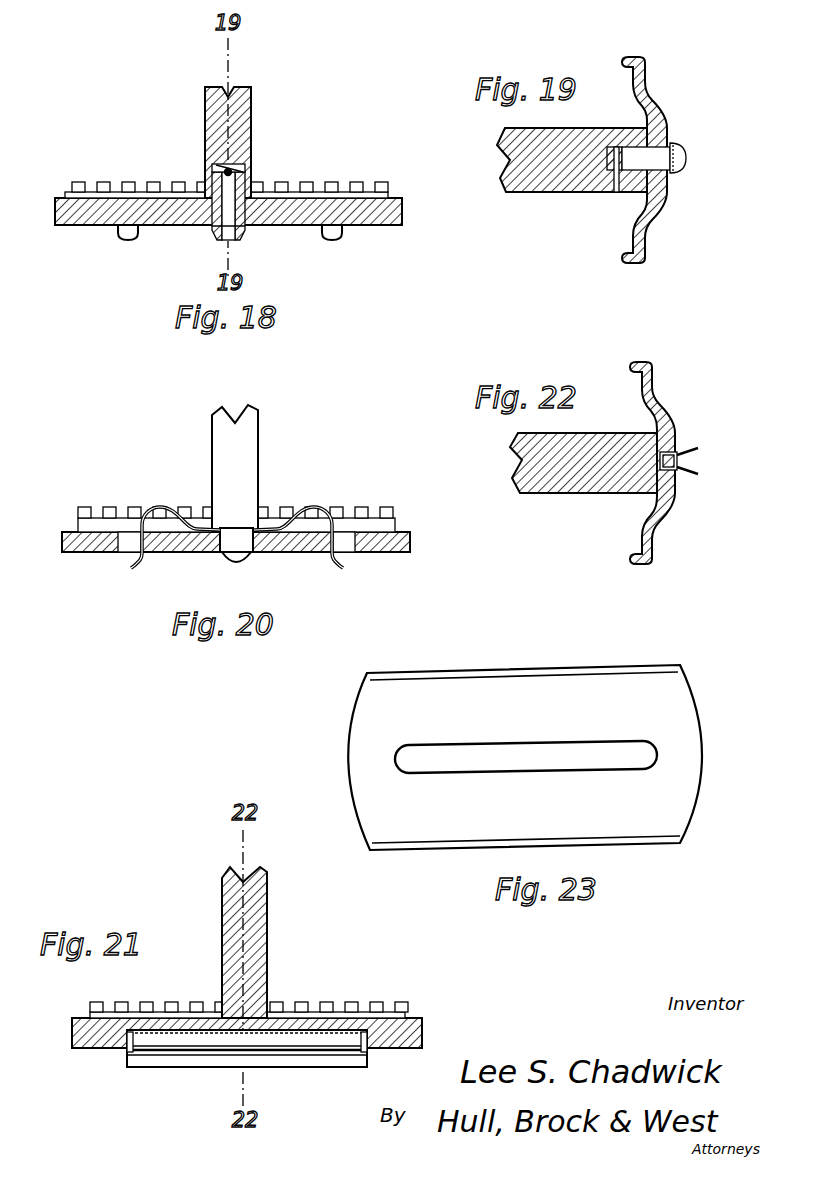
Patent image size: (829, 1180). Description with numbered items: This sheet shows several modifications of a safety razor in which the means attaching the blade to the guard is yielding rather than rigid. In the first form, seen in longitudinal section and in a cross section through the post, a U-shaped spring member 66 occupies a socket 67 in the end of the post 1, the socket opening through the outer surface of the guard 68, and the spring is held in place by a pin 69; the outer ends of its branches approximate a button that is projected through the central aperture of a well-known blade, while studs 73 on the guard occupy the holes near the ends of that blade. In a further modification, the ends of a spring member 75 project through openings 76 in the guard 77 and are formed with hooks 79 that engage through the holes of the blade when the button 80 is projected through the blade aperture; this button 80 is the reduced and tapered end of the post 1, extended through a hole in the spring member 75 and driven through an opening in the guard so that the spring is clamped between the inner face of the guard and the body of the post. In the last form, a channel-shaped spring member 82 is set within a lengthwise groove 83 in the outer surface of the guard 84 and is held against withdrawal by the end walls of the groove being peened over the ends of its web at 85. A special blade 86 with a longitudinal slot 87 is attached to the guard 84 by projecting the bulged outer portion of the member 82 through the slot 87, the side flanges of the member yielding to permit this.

In FIG. 18, the post 1 is at (252, 108).
In FIG. 19, the post 1 is at (548, 196).
In FIG. 20, the post 1 is at (250, 444).
In FIG. 22, the post 1 is at (552, 485).
In FIG. 21, the post 1 is at (262, 925).
In FIG. 18, the U-shaped spring member 66 is at (246, 171).
In FIG. 19, the U-shaped spring member 66 is at (688, 158).
In FIG. 18, the socket 67 is at (214, 175).
In FIG. 19, the socket 67 is at (652, 170).
In FIG. 18, the guard 68 is at (288, 226).
In FIG. 19, the guard 68 is at (656, 105).
In FIG. 18, the pin 69 is at (216, 164).
In FIG. 19, the pin 69 is at (617, 194).
In FIG. 18, the studs 73 is at (132, 240).
In FIG. 20, the spring member 75 is at (165, 506).
In FIG. 20, the openings 76 is at (125, 538).
In FIG. 20, the guard 77 is at (85, 553).
In FIG. 20, the hooks 79 is at (150, 568).
In FIG. 20, the button 80 is at (245, 562).
In FIG. 22, the spring member 82 is at (682, 450).
In FIG. 21, the spring member 82 is at (296, 1050).
In FIG. 22, the groove 83 is at (676, 478).
In FIG. 22, the guard 84 is at (656, 396).
In FIG. 21, the guard 84 is at (400, 1042).
In FIG. 21, the peened end walls 85 is at (128, 1057).
In FIG. 23, the blade 86 is at (523, 683).
In FIG. 23, the longitudinal slot 87 is at (586, 752).